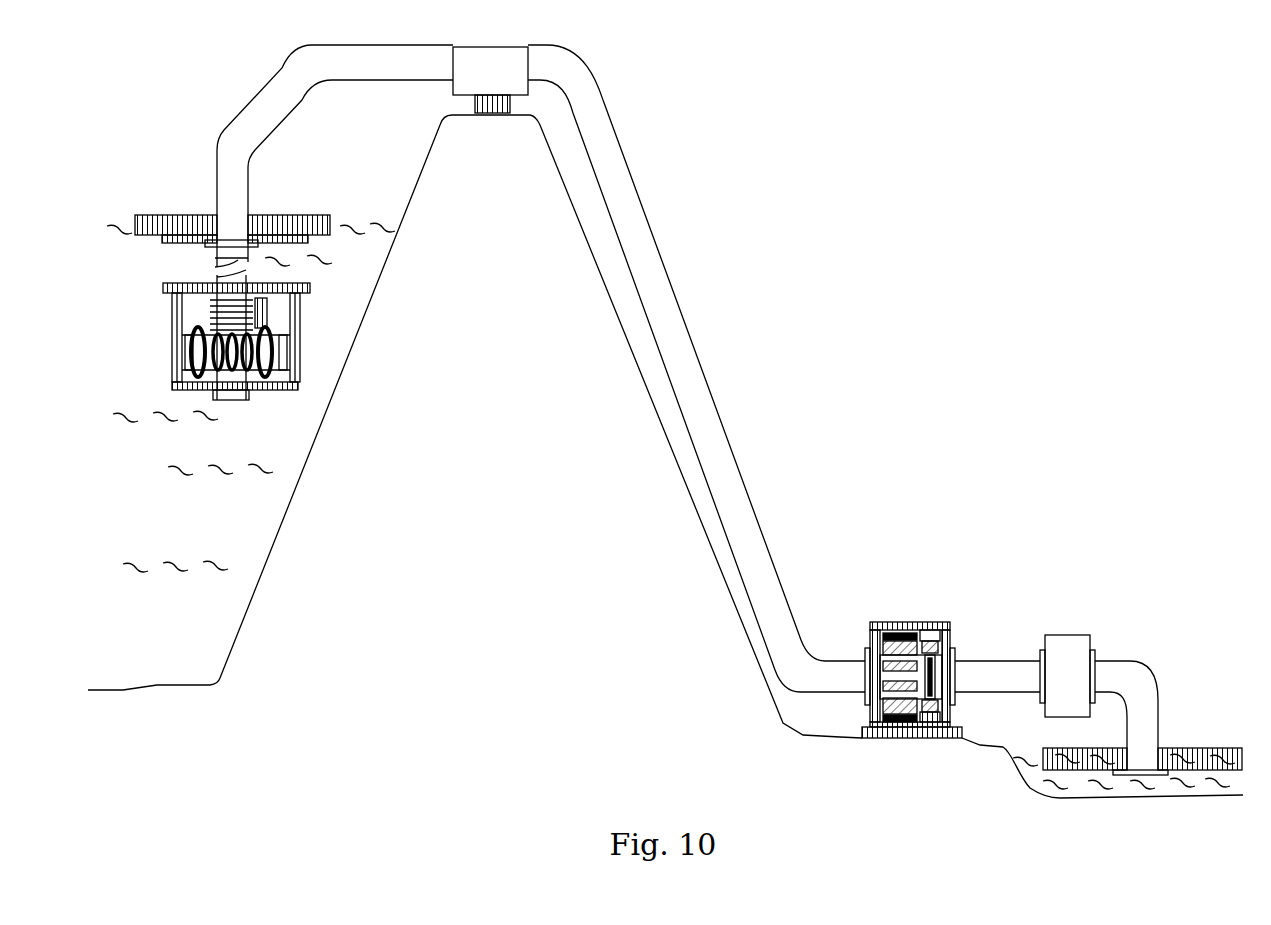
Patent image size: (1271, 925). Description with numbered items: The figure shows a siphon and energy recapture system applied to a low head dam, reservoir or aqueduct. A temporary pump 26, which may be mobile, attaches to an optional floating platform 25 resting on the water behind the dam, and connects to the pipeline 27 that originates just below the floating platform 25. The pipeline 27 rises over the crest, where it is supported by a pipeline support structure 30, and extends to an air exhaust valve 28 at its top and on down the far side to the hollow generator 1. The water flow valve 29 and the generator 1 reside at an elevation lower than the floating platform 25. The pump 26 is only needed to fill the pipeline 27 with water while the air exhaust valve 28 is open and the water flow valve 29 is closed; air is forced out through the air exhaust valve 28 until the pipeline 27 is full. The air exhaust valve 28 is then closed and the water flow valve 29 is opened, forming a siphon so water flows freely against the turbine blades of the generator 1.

The generator 1 is at (880, 608).
The floating platform 25 is at (183, 215).
The temporary pump 26 is at (157, 333).
The pipeline 27 is at (627, 368).
The air exhaust valve 28 is at (490, 71).
The water flow valve 29 is at (1067, 676).
The pipeline support structure 30 is at (493, 115).